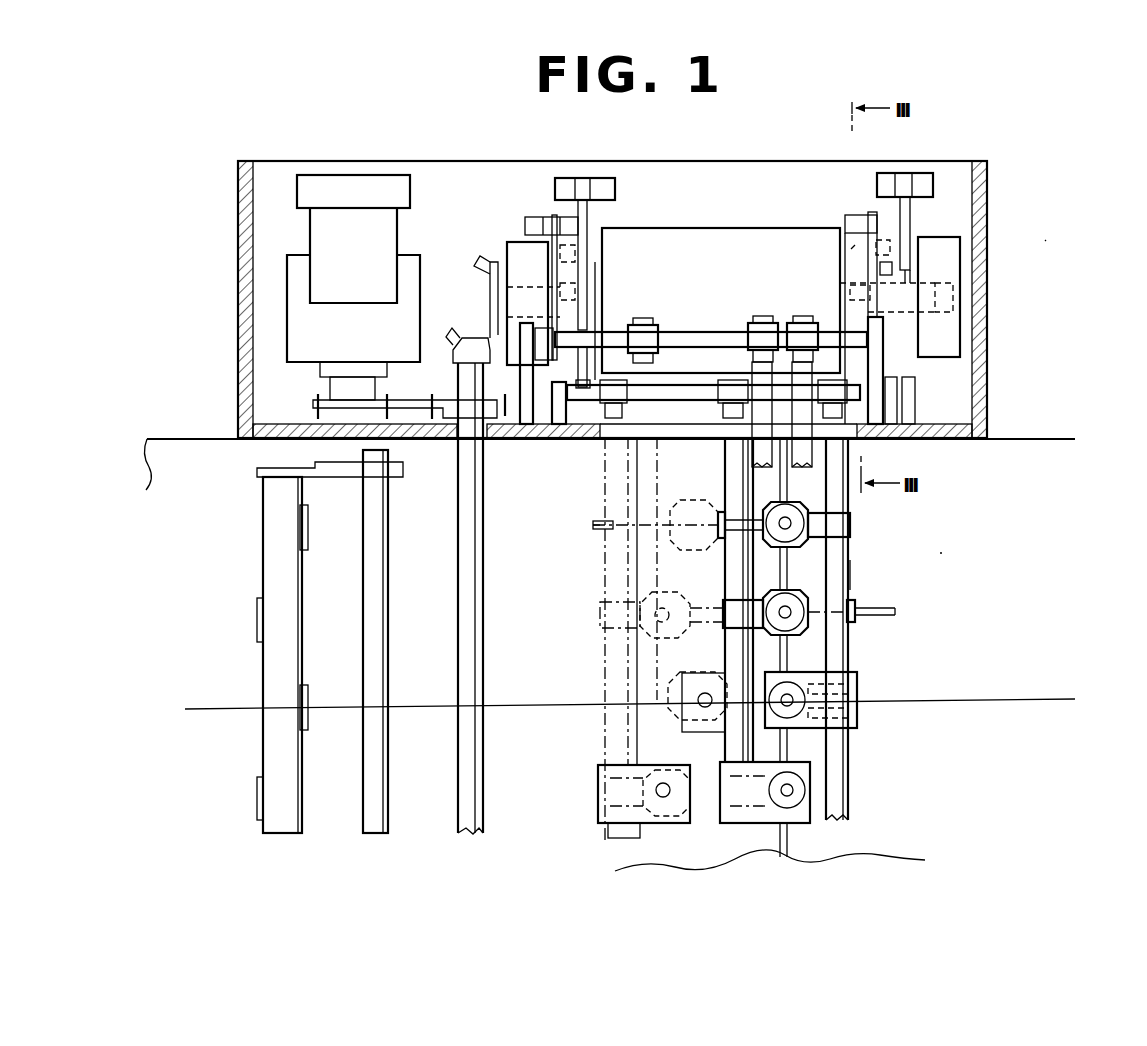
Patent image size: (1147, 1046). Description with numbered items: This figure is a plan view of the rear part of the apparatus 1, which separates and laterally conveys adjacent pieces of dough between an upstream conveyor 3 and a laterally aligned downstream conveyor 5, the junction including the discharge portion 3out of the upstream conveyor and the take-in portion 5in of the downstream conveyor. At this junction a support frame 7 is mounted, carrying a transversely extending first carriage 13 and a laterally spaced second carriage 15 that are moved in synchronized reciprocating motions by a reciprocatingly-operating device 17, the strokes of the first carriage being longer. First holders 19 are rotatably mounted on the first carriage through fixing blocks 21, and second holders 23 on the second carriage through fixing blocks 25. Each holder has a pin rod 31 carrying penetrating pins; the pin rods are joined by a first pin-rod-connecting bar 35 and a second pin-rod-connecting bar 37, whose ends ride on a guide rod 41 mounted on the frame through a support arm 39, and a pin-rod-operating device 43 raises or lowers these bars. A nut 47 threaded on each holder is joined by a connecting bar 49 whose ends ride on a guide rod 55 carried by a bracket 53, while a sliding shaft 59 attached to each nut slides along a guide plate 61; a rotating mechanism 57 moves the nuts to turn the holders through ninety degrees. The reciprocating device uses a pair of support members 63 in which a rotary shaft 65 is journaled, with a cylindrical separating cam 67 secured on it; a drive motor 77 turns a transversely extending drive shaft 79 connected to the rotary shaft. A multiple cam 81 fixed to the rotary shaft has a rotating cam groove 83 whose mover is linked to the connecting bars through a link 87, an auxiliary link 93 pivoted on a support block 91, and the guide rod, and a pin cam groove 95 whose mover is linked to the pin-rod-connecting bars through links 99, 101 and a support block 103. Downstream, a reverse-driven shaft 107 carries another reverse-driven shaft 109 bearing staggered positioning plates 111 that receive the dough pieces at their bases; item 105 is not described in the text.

The apparatus 1 is at (1045, 240).
The upstream conveyor 3 is at (1012, 437).
The downstream conveyor 5 is at (205, 435).
The support frame 7 is at (988, 316).
The first carriage 13 is at (600, 740).
The second carriage 15 is at (850, 778).
The reciprocatingly-operating device 17 is at (706, 227).
The first holder 19 is at (668, 614).
The fixing block 21 is at (640, 830).
The second holder 23 is at (812, 546).
The fixing block 25 is at (858, 681).
The pin rod 31 is at (850, 575).
The first pin-rod-connecting bar 35 is at (725, 445).
The second pin-rod-connecting bar 37 is at (850, 448).
The support arm 39 is at (526, 437).
The guide rod 41 is at (700, 332).
The pin-rod-operating device 43 is at (592, 222).
The nut 47 is at (810, 512).
The connecting bar 49 is at (605, 555).
The bracket 53 is at (562, 437).
The guide rod 55 is at (682, 396).
The rotating mechanism 57 is at (552, 214).
The sliding shaft 59 is at (676, 522).
The guide plate 61 is at (720, 512).
The support member 63 is at (507, 262).
The rotary shaft 65 is at (955, 283).
The cylindrical separating cam 67 is at (630, 228).
The drive motor 77 is at (368, 257).
The drive shaft 79 is at (460, 600).
The multiple cam 81 is at (862, 277).
The rotating cam groove 83 is at (585, 258).
The link 87 is at (600, 330).
The support block 91 is at (602, 178).
The auxiliary link 93 is at (585, 284).
The pin cam groove 95 is at (540, 248).
The link 99 is at (512, 278).
The link 101 is at (552, 225).
The support block 103 is at (871, 212).
The bar stock rack 105 is at (245, 540).
The reverse-driven shaft 107 is at (363, 598).
The reverse-driven shaft 109 is at (263, 676).
The positioning plate 111 is at (308, 520).
The take-in portion 5in is at (600, 523).
The discharge portion 3out is at (942, 553).